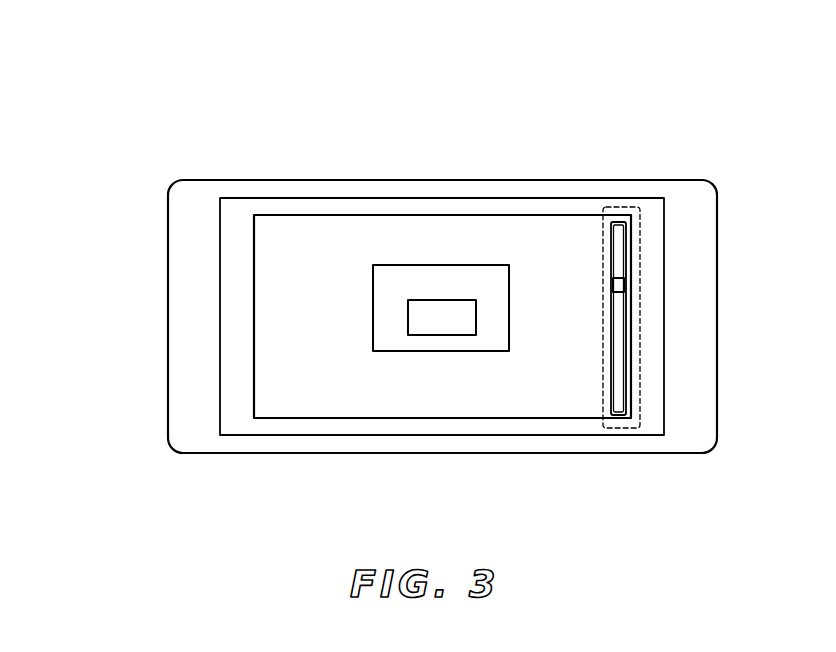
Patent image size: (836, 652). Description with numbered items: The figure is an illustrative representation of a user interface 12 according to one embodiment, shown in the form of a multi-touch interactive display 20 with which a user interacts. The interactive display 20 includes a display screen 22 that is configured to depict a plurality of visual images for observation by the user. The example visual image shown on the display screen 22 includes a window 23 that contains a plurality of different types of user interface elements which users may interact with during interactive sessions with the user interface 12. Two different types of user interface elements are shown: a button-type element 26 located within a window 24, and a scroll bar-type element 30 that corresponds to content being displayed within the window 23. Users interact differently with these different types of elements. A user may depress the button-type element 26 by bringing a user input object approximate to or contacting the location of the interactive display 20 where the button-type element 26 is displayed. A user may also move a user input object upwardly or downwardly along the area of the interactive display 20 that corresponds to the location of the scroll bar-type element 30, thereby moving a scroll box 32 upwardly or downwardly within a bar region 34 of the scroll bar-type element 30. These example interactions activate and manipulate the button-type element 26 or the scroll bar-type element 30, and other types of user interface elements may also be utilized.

The user interface 12 is at (74, 112).
The multi-touch interactive display 20 is at (166, 317).
The display screen 22 is at (290, 197).
The window 23 is at (442, 215).
The window 24 is at (372, 308).
The button-type element 26 is at (443, 336).
The scroll bar-type element 30 is at (641, 250).
The scroll box 32 is at (612, 285).
The bar region 34 is at (624, 367).